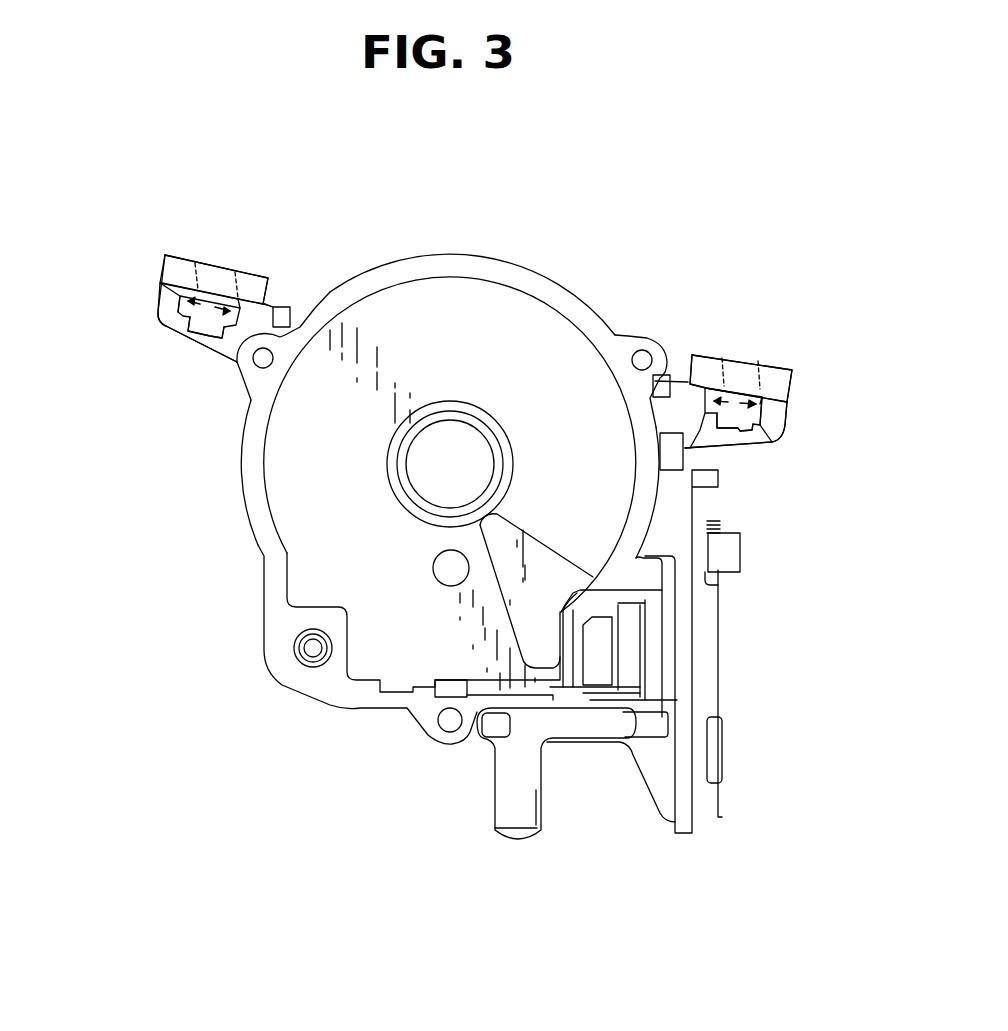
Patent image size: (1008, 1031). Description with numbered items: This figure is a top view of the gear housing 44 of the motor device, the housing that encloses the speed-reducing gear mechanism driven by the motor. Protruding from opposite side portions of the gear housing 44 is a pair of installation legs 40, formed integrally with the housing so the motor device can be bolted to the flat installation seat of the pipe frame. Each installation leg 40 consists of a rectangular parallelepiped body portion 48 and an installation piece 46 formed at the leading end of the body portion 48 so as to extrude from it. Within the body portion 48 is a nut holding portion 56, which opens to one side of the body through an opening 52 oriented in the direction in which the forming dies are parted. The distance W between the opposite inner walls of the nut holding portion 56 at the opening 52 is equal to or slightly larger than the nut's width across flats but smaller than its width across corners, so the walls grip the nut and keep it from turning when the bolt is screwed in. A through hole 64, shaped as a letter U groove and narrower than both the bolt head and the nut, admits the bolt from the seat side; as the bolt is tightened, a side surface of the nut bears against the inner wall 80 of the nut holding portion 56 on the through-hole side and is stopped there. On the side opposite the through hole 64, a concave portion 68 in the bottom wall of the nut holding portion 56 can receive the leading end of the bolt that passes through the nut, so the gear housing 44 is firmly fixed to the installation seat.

The installation leg 40 is at (97, 242).
The gear housing 44 is at (315, 693).
The installation piece 46 is at (168, 268).
The body portion 48 is at (165, 307).
The opening 52 is at (183, 316).
The nut holding portion 56 is at (203, 318).
The through hole 64 is at (206, 280).
The concave portion 68 is at (210, 338).
The inner wall 80 is at (230, 297).
The distance between opposite inner walls W is at (212, 298).